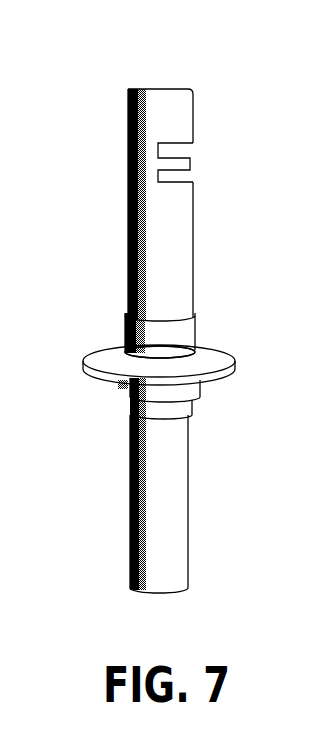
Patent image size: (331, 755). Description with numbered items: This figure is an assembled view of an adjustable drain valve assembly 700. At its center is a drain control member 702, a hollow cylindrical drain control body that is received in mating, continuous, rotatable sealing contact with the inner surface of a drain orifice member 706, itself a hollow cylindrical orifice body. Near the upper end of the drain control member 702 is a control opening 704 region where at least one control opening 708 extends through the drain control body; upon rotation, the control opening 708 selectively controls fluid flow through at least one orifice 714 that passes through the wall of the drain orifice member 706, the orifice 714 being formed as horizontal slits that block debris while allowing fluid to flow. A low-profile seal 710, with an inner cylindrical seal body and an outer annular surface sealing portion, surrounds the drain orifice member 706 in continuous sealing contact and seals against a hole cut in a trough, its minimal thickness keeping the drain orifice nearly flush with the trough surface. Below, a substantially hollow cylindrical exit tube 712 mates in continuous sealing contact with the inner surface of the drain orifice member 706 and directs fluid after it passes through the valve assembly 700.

The adjustable drain valve assembly 700 is at (178, 64).
The drain control member 702 is at (164, 220).
The groove 704 is at (176, 157).
The drain orifice member 706 is at (150, 330).
The control opening 708 is at (178, 353).
The orifice 714 is at (160, 352).
The low-profile seal 710 is at (120, 375).
The exit tube 712 is at (162, 505).